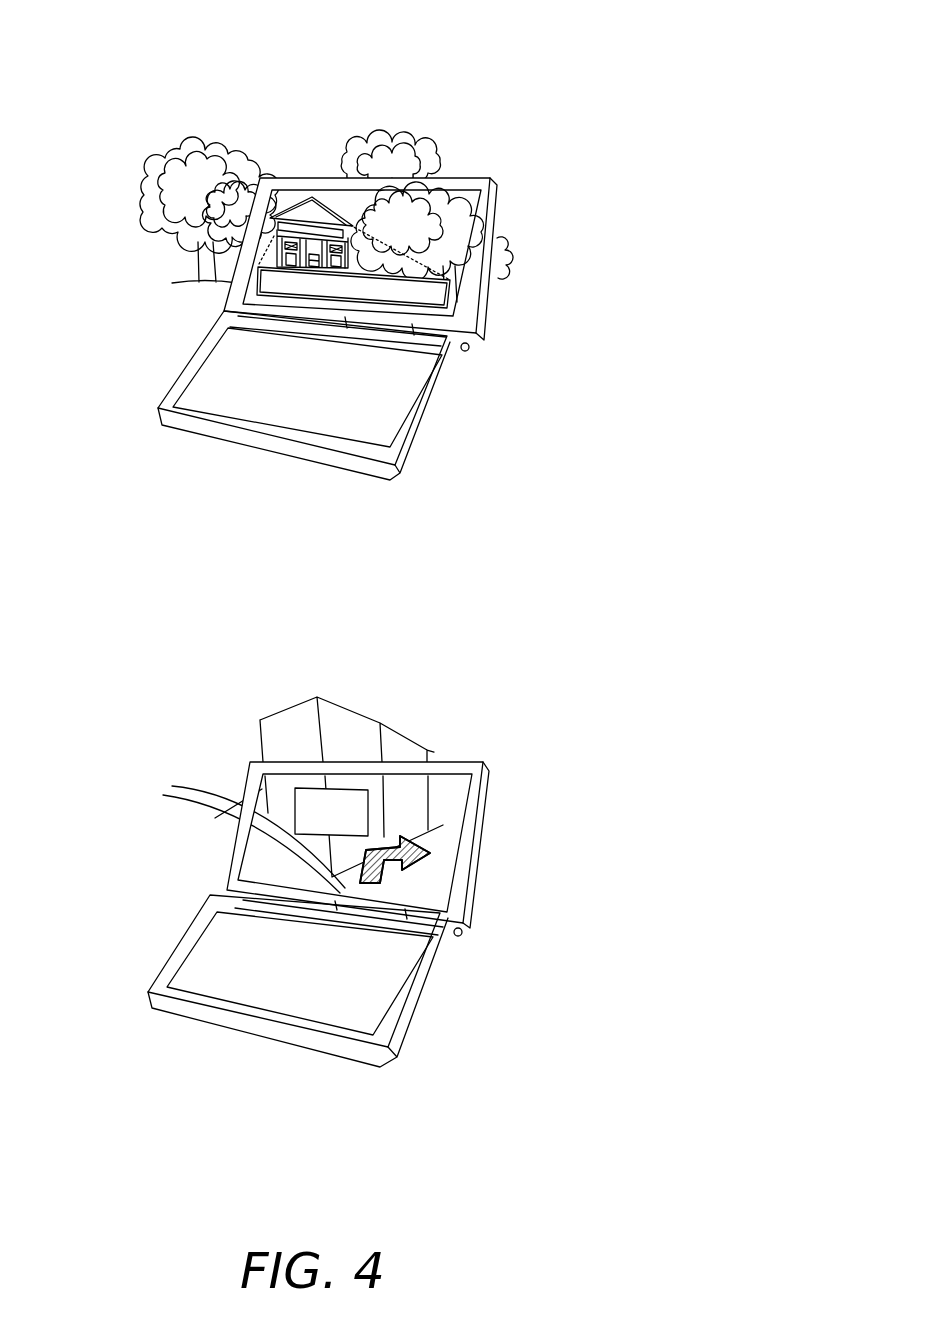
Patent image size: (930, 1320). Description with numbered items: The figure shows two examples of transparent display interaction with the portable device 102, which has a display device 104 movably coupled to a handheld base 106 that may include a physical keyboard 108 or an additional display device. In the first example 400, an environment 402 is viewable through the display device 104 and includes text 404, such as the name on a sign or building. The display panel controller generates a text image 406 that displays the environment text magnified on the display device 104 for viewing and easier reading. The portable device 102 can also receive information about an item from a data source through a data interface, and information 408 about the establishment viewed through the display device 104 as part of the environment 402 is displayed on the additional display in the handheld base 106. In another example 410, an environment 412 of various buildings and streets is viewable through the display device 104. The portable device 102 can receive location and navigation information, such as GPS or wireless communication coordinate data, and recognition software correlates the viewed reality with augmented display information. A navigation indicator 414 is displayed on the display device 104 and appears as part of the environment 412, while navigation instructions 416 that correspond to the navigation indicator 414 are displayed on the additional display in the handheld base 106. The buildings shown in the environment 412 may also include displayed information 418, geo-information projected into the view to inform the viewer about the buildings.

The first example 400 is at (620, 66).
The portable device 102 is at (436, 450).
The display device 104 is at (442, 177).
The handheld base 106 is at (335, 474).
The physical keyboard 108 is at (204, 392).
The environment 402 is at (224, 270).
The text 404 is at (312, 220).
The text image 406 is at (410, 316).
The information 408 is at (297, 407).
The another example 410 is at (478, 663).
The environment 412 is at (262, 860).
The navigation indicator 414 is at (387, 877).
The navigation instructions 416 is at (287, 997).
The displayed information 418 is at (310, 787).